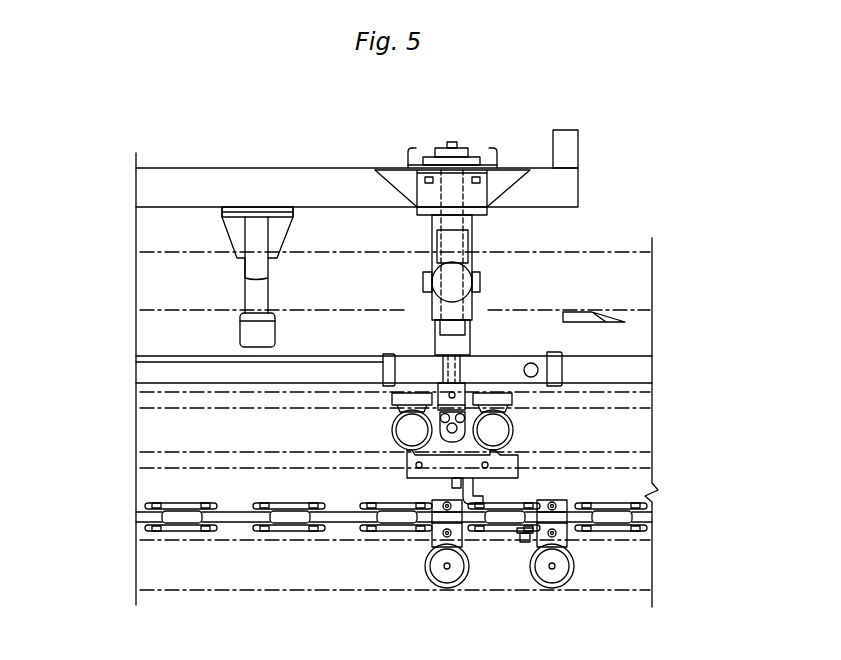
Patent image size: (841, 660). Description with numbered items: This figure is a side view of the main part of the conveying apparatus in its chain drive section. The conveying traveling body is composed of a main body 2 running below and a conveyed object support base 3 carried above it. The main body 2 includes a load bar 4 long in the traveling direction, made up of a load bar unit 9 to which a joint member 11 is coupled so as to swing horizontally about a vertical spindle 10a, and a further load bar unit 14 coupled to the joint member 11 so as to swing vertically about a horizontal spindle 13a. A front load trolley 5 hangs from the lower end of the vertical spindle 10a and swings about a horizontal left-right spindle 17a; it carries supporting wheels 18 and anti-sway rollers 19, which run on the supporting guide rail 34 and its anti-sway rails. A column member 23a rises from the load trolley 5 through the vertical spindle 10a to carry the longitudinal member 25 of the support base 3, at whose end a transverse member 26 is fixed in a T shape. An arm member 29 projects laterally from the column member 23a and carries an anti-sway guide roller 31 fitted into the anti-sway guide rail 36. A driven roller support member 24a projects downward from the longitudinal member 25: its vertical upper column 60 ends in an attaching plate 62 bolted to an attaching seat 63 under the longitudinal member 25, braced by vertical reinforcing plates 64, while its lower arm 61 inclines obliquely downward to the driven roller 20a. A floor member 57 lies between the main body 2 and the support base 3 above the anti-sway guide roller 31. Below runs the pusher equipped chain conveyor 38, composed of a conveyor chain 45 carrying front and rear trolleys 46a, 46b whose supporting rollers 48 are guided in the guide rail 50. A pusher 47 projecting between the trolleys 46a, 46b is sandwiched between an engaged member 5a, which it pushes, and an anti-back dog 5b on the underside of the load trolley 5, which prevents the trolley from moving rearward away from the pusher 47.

The main body 2 is at (168, 343).
The conveyed object support base 3 is at (339, 167).
The load bar 4 is at (628, 355).
The load trolley 5 is at (407, 475).
The engaged member 5a is at (483, 498).
The anti-back dog 5b is at (450, 485).
The load bar unit 9 is at (173, 372).
The vertical spindle 10a is at (433, 378).
The joint member 11 is at (487, 365).
The horizontal spindle 13a is at (547, 372).
The load bar unit 14 is at (645, 370).
The horizontal left-right spindle 17a is at (450, 432).
The supporting wheels 18 is at (403, 432).
The anti-sway rollers 19 is at (407, 400).
The driven roller 20a is at (263, 337).
The column member 23a is at (472, 243).
The driven roller support member 24a is at (243, 267).
The longitudinal member 25 is at (158, 186).
The transverse member 26 is at (572, 146).
The arm member 29 is at (423, 282).
The anti-sway guide roller 31 is at (467, 282).
The supporting guide rail 34 is at (173, 428).
The anti-sway guide rail 36 is at (633, 282).
The pusher equipped chain conveyor 38 is at (612, 497).
The conveyor chain 45 is at (290, 532).
The trolley 46a is at (435, 532).
The trolley 46b is at (567, 538).
The pusher 47 is at (468, 492).
The supporting rollers 48 is at (452, 578).
The guide rail 50 is at (177, 574).
The floor member 57 is at (617, 252).
The upper column 60 is at (257, 227).
The lower arm 61 is at (253, 296).
The attaching plate 62 is at (237, 213).
The attaching seat 63 is at (277, 212).
The vertical reinforcing plates 64 is at (240, 246).